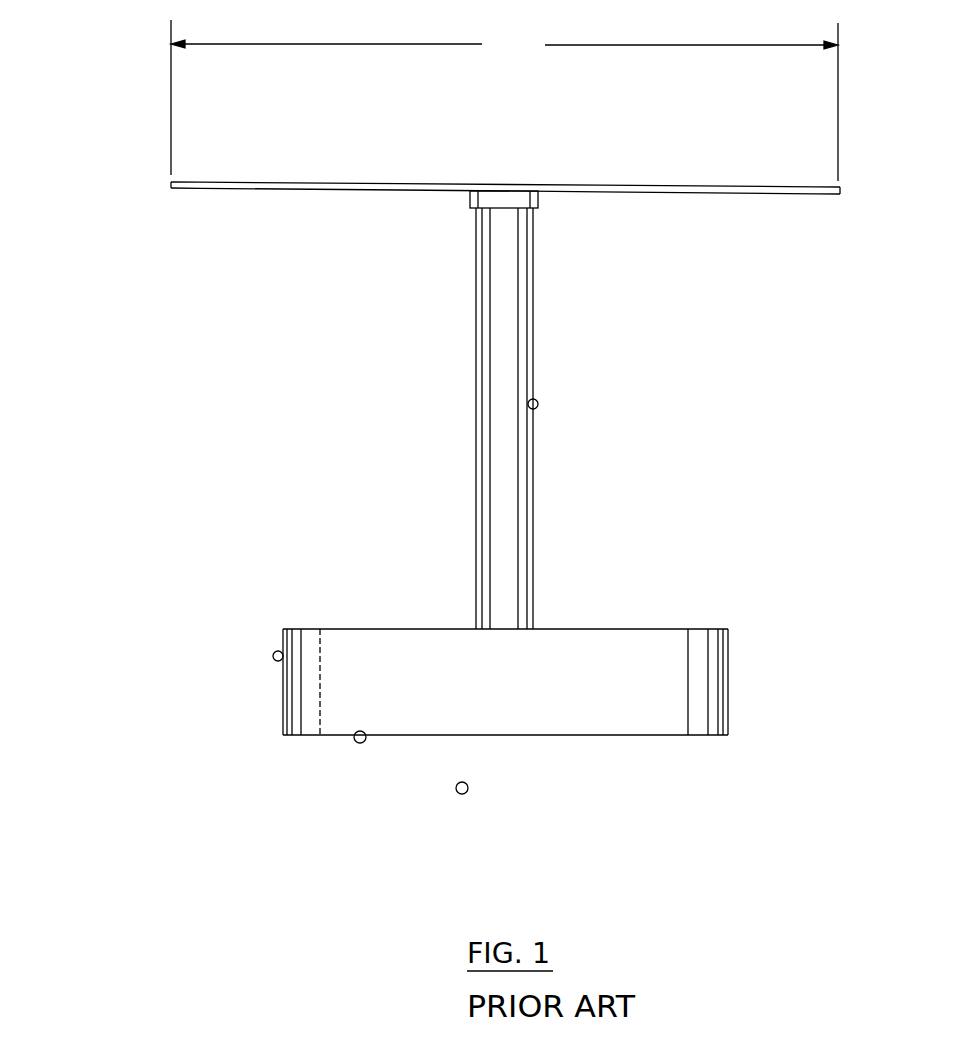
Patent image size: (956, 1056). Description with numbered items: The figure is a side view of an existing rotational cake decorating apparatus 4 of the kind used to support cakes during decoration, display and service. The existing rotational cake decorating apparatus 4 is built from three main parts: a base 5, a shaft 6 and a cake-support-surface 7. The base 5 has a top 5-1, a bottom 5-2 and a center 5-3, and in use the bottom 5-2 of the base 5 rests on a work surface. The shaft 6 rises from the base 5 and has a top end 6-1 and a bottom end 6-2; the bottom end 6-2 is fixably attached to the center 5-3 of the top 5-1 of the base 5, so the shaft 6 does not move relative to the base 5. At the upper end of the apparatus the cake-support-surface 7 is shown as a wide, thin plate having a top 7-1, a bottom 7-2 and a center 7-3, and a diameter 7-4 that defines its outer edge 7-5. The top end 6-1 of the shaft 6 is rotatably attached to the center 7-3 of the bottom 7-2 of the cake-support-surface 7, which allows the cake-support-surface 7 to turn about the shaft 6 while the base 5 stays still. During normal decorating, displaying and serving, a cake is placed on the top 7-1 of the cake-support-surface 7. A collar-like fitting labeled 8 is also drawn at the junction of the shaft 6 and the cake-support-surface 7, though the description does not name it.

The existing rotational cake decorating apparatus 4 is at (428, 845).
The base 5 is at (440, 651).
The top of base 5-1 is at (647, 651).
The bottom of base 5-2 is at (494, 777).
The center of base 5-3 is at (544, 664).
The shaft 6 is at (538, 404).
The top end of shaft 6-1 is at (586, 238).
The bottom end of shaft 6-2 is at (581, 582).
The cake-support-surface 7 is at (707, 140).
The top of cake-support-surface 7-1 is at (298, 131).
The bottom of cake-support-surface 7-2 is at (862, 244).
The center of cake-support-surface 7-3 is at (508, 141).
The diameter of cake-support-surface 7-4 is at (504, 100).
The edge of cake-support-surface 7-5 is at (128, 216).
The collar 8 is at (441, 237).